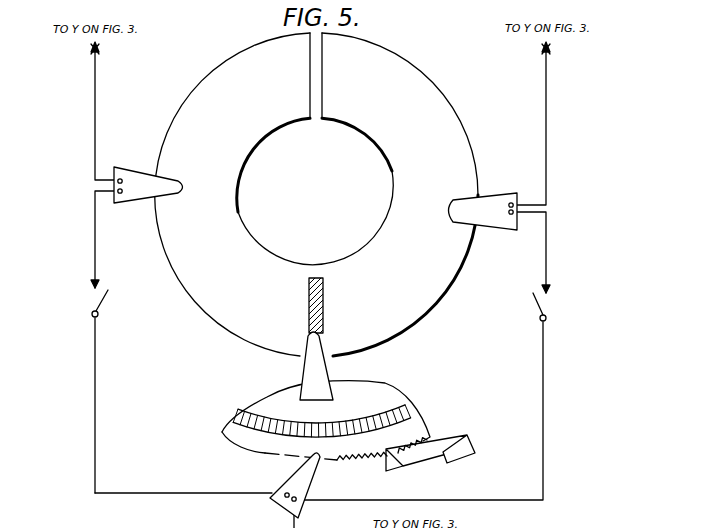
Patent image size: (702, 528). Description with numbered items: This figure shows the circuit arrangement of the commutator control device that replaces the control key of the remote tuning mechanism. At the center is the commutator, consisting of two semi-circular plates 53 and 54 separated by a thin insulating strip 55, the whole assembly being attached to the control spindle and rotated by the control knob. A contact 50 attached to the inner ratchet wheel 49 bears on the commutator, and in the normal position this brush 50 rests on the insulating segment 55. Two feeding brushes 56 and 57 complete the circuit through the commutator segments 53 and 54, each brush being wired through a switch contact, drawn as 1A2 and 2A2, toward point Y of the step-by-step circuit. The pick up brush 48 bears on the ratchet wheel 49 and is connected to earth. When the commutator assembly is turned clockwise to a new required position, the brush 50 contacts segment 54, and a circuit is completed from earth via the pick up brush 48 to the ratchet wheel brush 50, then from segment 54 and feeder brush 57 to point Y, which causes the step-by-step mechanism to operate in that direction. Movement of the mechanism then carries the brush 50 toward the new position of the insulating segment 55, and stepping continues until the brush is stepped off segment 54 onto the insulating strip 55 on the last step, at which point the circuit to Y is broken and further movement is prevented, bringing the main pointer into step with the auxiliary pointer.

The pick up brush 48 is at (295, 483).
The inner ratchet wheel 49 is at (400, 437).
The contact 50 is at (301, 370).
The semi-circular plate 53 is at (237, 322).
The semi-circular plate 54 is at (412, 320).
The thin insulating strip 55 is at (315, 305).
The feeding brush 56 is at (145, 190).
The feeding brush 57 is at (500, 223).
The switch contact 1A2 is at (84, 298).
The switch contact 2A2 is at (555, 303).